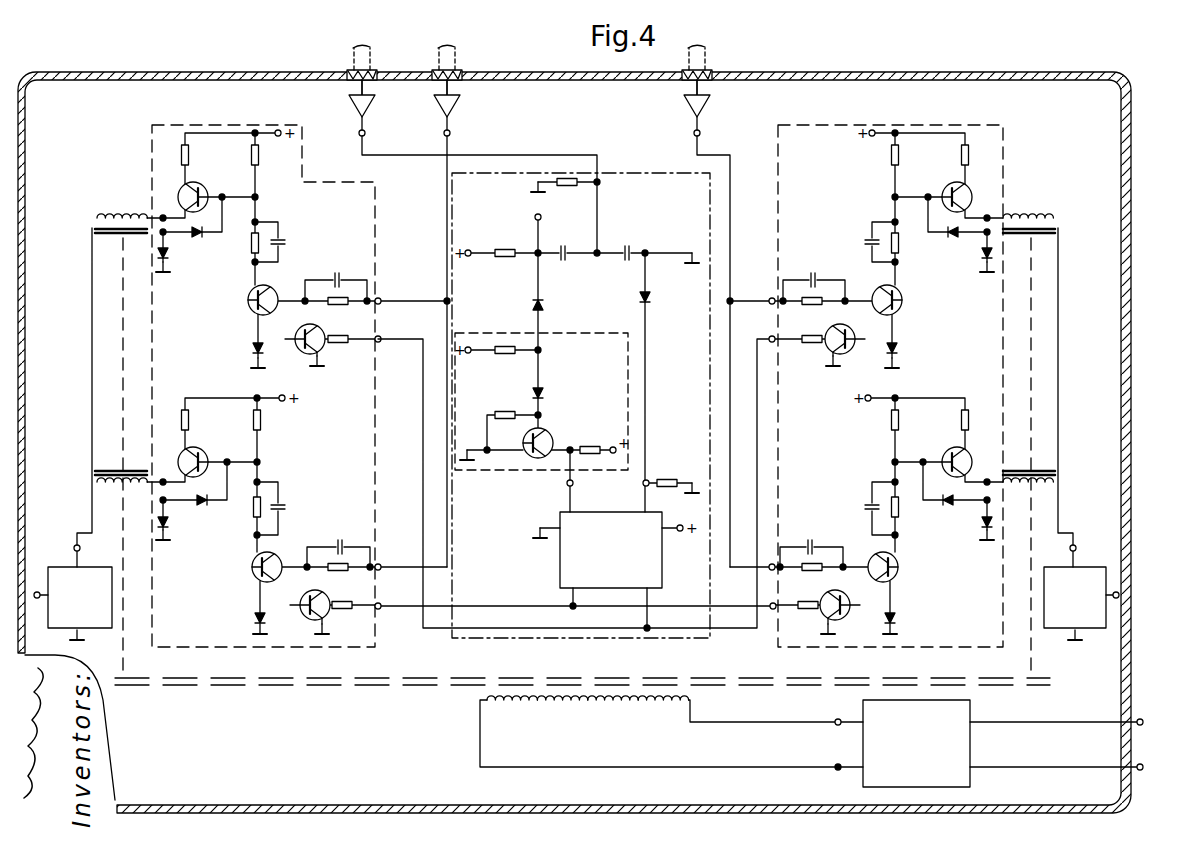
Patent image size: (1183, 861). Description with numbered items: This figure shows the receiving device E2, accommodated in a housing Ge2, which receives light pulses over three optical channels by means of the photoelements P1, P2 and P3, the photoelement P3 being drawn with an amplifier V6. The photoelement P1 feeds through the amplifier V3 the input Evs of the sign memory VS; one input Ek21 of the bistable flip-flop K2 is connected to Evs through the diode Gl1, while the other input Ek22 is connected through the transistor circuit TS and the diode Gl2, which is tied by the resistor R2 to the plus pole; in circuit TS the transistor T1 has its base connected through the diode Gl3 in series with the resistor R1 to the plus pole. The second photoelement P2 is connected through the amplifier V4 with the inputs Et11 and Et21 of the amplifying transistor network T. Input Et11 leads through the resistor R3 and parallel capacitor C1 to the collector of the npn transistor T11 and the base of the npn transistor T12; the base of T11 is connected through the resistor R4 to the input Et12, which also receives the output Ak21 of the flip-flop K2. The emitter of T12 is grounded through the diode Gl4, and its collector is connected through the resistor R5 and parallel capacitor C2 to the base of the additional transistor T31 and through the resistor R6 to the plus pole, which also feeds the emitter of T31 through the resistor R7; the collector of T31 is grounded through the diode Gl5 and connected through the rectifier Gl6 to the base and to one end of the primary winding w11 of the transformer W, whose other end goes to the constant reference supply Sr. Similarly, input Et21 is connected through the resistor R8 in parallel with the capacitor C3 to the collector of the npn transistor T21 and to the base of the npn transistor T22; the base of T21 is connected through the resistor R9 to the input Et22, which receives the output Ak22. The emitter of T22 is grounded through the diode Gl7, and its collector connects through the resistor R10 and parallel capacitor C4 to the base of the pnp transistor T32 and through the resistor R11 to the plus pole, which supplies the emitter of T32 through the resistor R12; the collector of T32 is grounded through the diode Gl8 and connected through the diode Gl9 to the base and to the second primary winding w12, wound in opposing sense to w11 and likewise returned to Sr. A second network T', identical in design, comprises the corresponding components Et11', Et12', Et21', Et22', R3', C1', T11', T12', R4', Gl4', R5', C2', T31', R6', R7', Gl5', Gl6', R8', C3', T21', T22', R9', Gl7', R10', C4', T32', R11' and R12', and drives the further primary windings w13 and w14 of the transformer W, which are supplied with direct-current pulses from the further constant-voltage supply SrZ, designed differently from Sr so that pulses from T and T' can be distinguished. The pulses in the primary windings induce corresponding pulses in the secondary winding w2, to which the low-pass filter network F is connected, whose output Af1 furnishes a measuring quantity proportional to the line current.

The photoelement P1 is at (349, 82).
The second photoelement P2 is at (461, 82).
The photoelement P3 is at (711, 82).
The amplifier V3 is at (353, 106).
The amplifier V4 is at (458, 106).
The amplifier V6 is at (708, 106).
The receiving device E2 is at (878, 53).
The housing Ge2 is at (1000, 72).
The amplifying transistor network T is at (250, 386).
The second transistor amplifier network T' is at (903, 386).
The resistor R7 is at (195, 158).
The resistor R6 is at (266, 158).
The additional transistor T31 is at (205, 189).
The primary winding w11 is at (112, 208).
The rectifier Gl6 is at (197, 245).
The diode Gl5 is at (176, 267).
The resistor R5 is at (244, 245).
The capacitor C2 is at (288, 244).
The capacitor C1 is at (337, 271).
The npn transistor T12 is at (249, 297).
The resistor R3 is at (338, 313).
The input Et11 is at (391, 294).
The npn transistor T11 is at (300, 337).
The resistor R4 is at (340, 352).
The input Et12 is at (391, 332).
The diode Gl4 is at (242, 357).
The resistor R12 is at (200, 423).
The resistor R11 is at (272, 423).
The additional pnp transistor T32 is at (211, 457).
The second primary winding w12 is at (97, 485).
The diode Gl9 is at (202, 512).
The diode Gl8 is at (167, 523).
The resistor R10 is at (243, 511).
The capacitor C4 is at (288, 512).
The capacitor C3 is at (340, 540).
The npn transistor T22 is at (255, 567).
The resistor R8 is at (340, 581).
The input Et21 is at (391, 560).
The diode Gl7 is at (243, 621).
The npn transistor T21 is at (305, 613).
The resistor R9 is at (342, 620).
The input Et22 is at (391, 598).
The supply of highly constant reference voltage Sr is at (73, 603).
The resistor R7' is at (978, 158).
The resistor R6' is at (908, 158).
The additional transistor T31' is at (972, 197).
The primary winding w13 is at (1039, 209).
The rectifier Gl6' is at (949, 246).
The diode Gl5' is at (973, 273).
The resistor R5' is at (908, 250).
The capacitor C2' is at (861, 246).
The capacitor C1' is at (817, 273).
The npn transistor T12' is at (905, 301).
The resistor R3' is at (814, 316).
The input Et11' is at (760, 292).
The npn transistor T11' is at (853, 339).
The resistor R4' is at (812, 355).
The input Et12' is at (760, 331).
The diode Gl4' is at (912, 358).
The resistor R12' is at (981, 424).
The resistor R11' is at (912, 424).
The additional pnp transistor T32' is at (973, 459).
The primary winding w14 is at (1045, 468).
The resistor R10' is at (912, 515).
The capacitor C4' is at (862, 514).
The capacitor C3' is at (814, 540).
The npn transistor T22' is at (902, 574).
The resistor R8' is at (813, 582).
The input Et21' is at (746, 580).
The diode Gl7' is at (911, 623).
The npn transistor T21' is at (854, 605).
The resistor R9' is at (808, 605).
The input Et22' is at (755, 628).
The further current supply of highly constant voltage SrZ is at (1081, 603).
The sign memory VS is at (683, 178).
The input of the sign memory Evs is at (579, 168).
The resistor R2 is at (505, 268).
The diode Gl2 is at (543, 306).
The diode Gl1 is at (650, 302).
The transistor circuit TS is at (590, 333).
The resistor R1 is at (503, 364).
The diode Gl3 is at (552, 385).
The transistor T1 is at (524, 443).
The input of the flip-flop Ek22 is at (548, 493).
The input of the flip-flop Ek21 is at (643, 483).
The bistable flip-flop K2 is at (611, 550).
The output of the flip-flop Ak22 is at (570, 604).
The output of the flip-flop Ak21 is at (650, 627).
The transformer W is at (470, 682).
The secondary winding w2 is at (524, 706).
The filter network F is at (916, 743).
The output of the filter network Af1 is at (1148, 740).